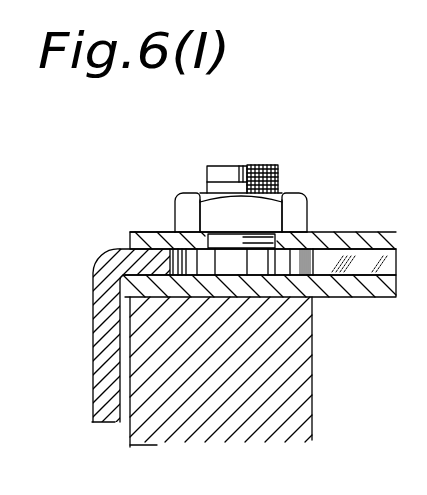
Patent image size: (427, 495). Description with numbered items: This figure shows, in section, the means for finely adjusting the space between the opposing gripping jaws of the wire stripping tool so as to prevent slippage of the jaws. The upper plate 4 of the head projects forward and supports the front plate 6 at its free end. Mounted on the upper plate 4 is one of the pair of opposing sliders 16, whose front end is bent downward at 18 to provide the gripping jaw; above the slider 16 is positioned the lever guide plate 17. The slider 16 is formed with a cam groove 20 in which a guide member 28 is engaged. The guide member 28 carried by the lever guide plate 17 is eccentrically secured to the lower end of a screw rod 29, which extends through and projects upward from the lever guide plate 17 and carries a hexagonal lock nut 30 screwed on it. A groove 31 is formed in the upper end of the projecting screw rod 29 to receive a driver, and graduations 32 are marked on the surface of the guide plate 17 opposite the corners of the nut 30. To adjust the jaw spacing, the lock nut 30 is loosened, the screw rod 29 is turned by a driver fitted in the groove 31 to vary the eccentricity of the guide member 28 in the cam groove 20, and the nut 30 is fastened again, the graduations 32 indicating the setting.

The upper plate 4 is at (323, 293).
The front plate 6 is at (130, 445).
The slider 16 is at (141, 258).
The lever guide plate 17 is at (362, 233).
The bent front end of slider 18 is at (96, 288).
The cam groove 20 is at (346, 276).
The guide member 28 is at (296, 257).
The screw rod 29 is at (270, 167).
The lock nut 30 is at (293, 203).
The groove 31 is at (240, 172).
The graduations 32 is at (166, 232).